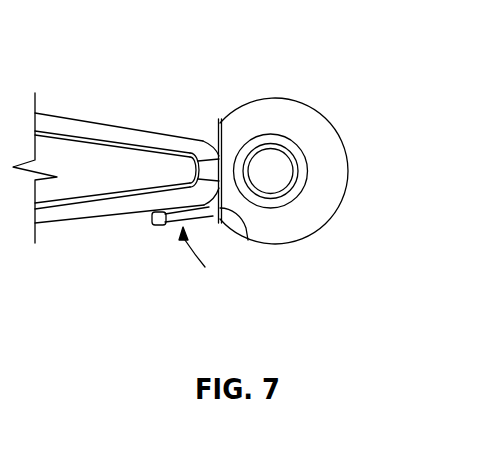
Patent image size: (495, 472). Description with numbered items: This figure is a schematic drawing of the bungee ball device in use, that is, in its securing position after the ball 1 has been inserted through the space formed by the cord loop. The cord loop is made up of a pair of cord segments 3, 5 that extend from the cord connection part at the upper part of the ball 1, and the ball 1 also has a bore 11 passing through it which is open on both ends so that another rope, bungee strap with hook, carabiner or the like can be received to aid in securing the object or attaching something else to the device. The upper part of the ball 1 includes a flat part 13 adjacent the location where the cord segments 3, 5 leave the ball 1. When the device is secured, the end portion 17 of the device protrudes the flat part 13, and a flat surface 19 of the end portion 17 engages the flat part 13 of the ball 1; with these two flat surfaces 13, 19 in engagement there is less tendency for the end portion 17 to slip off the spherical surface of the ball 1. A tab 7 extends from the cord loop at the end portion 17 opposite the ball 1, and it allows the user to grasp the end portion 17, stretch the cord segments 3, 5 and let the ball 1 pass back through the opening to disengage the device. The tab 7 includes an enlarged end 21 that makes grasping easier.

The ball 1 is at (330, 142).
The cord segment 3 is at (78, 119).
The cord segment 5 is at (63, 223).
The tab 7 is at (173, 225).
The bore 11 is at (283, 181).
The flat part 13 is at (216, 124).
The end portion 17 is at (201, 265).
The flat surface 19 is at (248, 240).
The enlarged end 21 is at (150, 221).